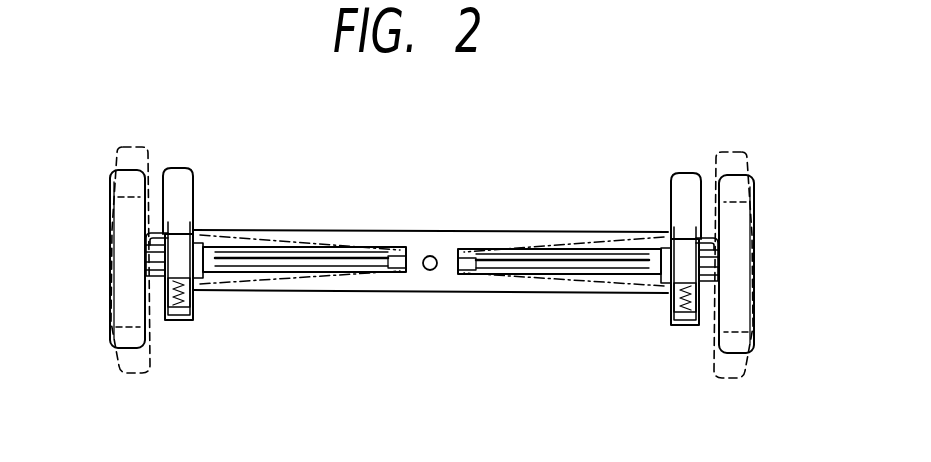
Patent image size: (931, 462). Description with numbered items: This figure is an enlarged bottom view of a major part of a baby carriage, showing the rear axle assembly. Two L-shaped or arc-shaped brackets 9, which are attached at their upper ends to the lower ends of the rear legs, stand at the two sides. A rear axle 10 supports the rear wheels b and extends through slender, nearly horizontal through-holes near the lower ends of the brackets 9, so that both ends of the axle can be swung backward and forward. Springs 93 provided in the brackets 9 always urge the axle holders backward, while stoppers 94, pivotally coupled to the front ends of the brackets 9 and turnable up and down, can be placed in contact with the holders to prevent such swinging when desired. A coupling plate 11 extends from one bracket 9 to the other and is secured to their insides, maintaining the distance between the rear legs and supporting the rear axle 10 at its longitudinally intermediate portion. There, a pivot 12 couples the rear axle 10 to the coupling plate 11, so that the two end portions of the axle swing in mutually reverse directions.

The rear wheel b is at (113, 205).
The bracket 9 is at (193, 298).
The rear axle 10 is at (325, 247).
The coupling plate 11 is at (518, 240).
The pivot 12 is at (435, 268).
The spring 93 is at (180, 322).
The stopper 94 is at (186, 168).